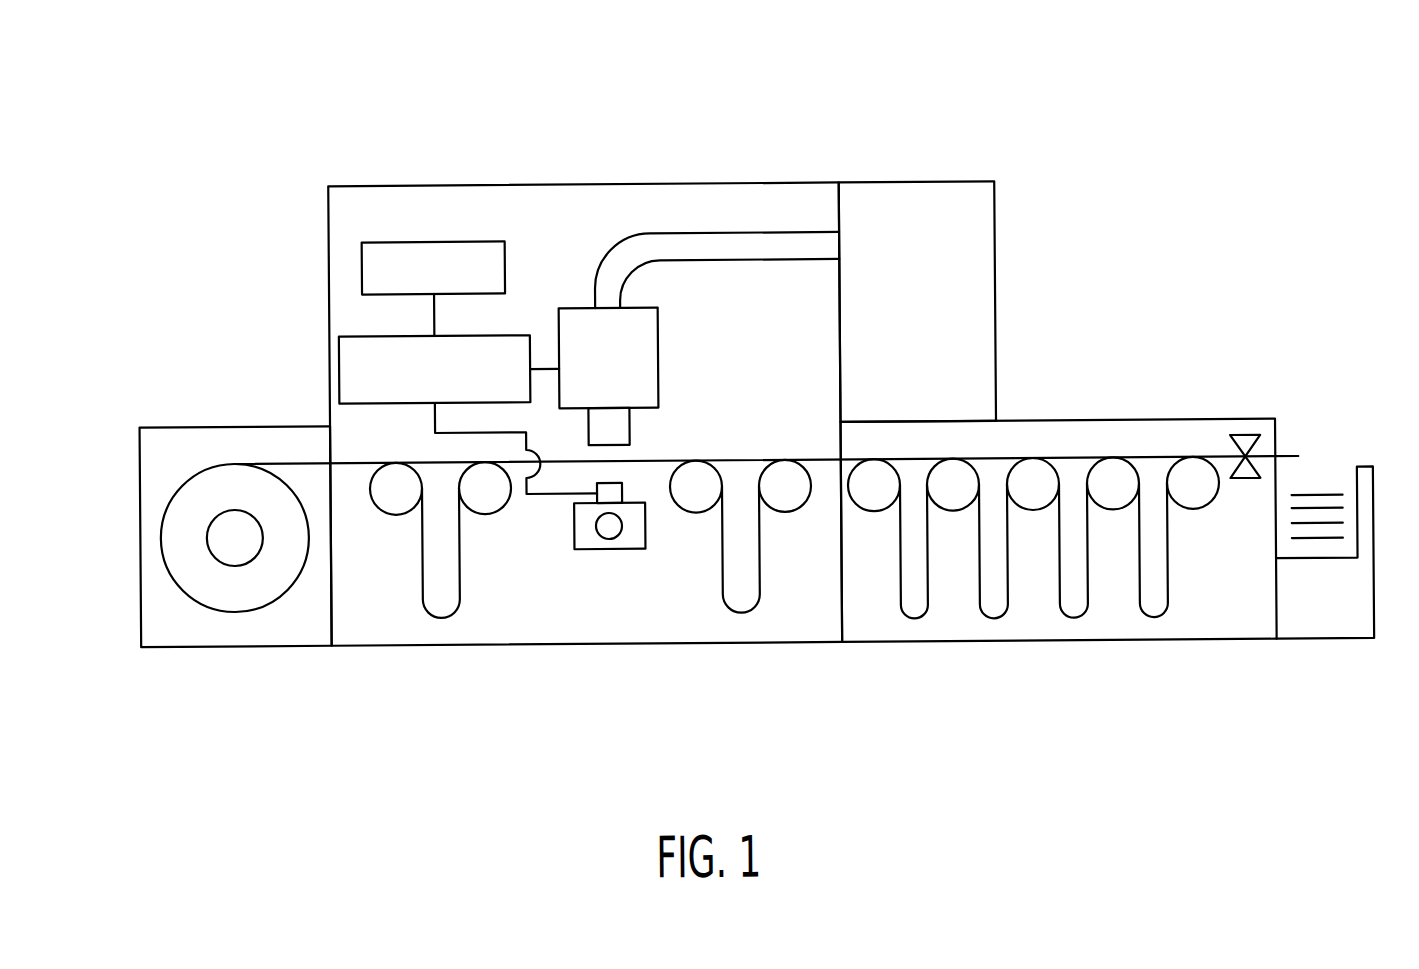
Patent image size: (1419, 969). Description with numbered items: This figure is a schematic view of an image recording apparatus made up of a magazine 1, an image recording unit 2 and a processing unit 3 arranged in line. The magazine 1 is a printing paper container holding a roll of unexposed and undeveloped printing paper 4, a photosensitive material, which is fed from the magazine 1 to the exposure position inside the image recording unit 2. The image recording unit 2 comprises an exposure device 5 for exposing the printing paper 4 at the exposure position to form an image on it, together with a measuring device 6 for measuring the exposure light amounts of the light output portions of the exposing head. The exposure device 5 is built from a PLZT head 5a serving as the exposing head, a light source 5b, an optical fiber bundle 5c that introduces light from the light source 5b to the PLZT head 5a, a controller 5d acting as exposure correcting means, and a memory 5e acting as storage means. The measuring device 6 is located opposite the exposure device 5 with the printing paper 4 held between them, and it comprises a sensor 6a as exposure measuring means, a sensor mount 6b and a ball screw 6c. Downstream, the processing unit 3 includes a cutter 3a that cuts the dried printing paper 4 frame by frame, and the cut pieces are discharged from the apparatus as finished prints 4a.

The magazine 1 is at (180, 424).
The image recording unit 2 is at (723, 128).
The processing unit 3 is at (1145, 408).
The cutter 3a is at (1250, 486).
The printing paper 4 is at (350, 460).
The finished prints 4a is at (1327, 498).
The exposure device 5 is at (805, 184).
The PLZT head 5a is at (658, 370).
The light source 5b is at (977, 252).
The optical fiber bundle 5c is at (745, 252).
The controller 5d is at (508, 334).
The memory 5e is at (444, 240).
The measuring device 6 is at (655, 610).
The sensor 6a is at (622, 488).
The sensor mount 6b is at (644, 533).
The ball screw 6c is at (608, 538).